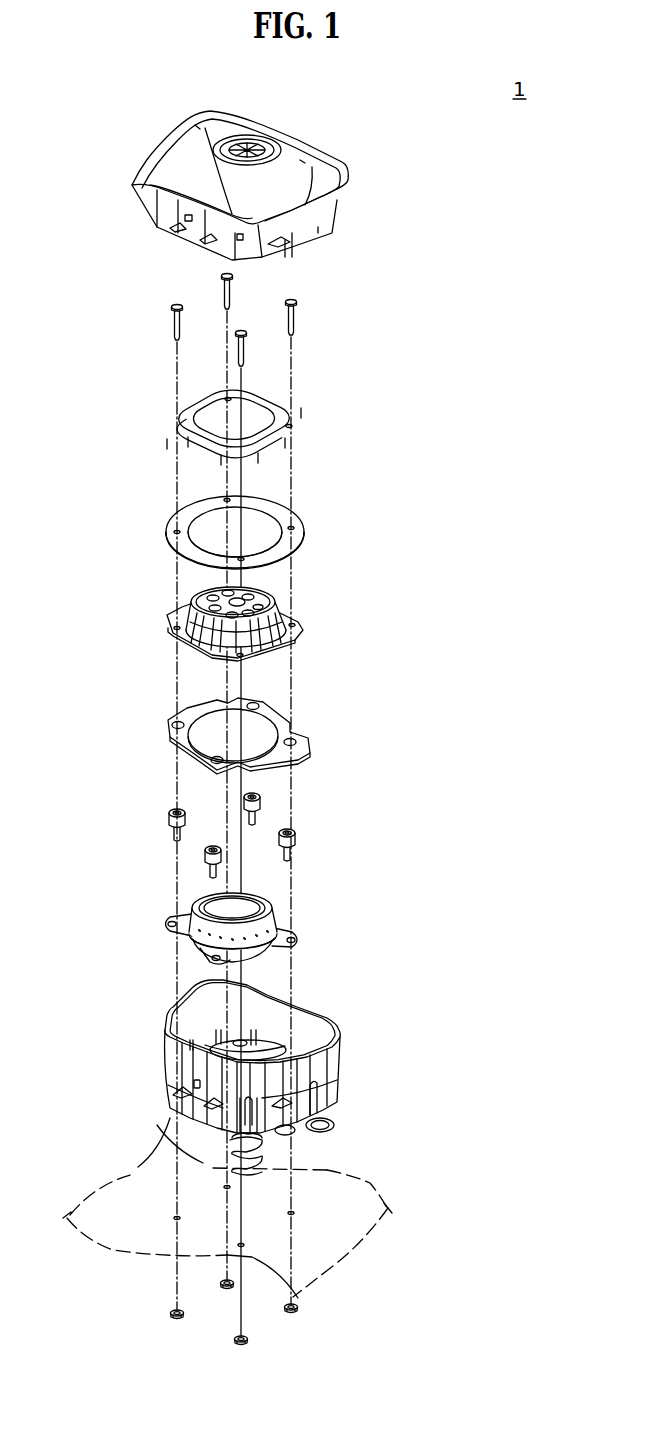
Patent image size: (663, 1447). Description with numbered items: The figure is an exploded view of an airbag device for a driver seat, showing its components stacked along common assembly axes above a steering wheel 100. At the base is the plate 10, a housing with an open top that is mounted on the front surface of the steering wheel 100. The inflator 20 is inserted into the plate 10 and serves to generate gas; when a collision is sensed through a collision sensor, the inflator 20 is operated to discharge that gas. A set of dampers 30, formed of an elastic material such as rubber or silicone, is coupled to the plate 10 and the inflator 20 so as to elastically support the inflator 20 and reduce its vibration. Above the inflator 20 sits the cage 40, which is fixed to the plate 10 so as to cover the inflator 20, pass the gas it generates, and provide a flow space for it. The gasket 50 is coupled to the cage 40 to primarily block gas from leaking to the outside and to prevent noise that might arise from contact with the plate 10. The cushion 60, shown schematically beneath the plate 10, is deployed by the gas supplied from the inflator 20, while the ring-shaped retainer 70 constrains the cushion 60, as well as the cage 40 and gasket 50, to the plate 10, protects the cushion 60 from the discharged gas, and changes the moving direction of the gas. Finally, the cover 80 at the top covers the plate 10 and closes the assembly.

The plate 10 is at (352, 1053).
The inflator 20 is at (300, 926).
The damper 30 is at (308, 830).
The cage 40 is at (310, 627).
The gasket 50 is at (321, 737).
The cushion 60 is at (316, 525).
The retainer 70 is at (310, 421).
The cover 80 is at (357, 167).
The steering wheel 100 is at (358, 1195).